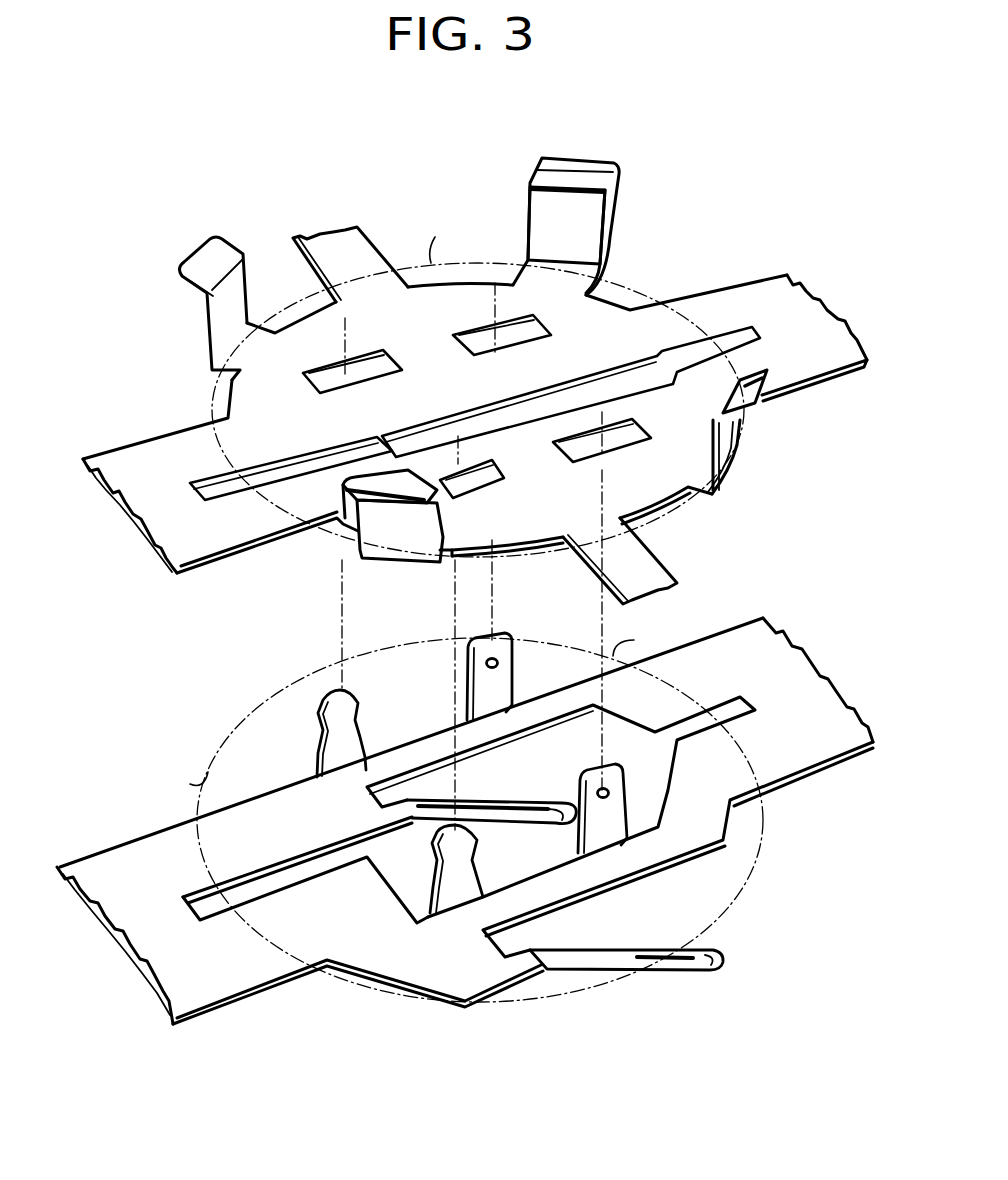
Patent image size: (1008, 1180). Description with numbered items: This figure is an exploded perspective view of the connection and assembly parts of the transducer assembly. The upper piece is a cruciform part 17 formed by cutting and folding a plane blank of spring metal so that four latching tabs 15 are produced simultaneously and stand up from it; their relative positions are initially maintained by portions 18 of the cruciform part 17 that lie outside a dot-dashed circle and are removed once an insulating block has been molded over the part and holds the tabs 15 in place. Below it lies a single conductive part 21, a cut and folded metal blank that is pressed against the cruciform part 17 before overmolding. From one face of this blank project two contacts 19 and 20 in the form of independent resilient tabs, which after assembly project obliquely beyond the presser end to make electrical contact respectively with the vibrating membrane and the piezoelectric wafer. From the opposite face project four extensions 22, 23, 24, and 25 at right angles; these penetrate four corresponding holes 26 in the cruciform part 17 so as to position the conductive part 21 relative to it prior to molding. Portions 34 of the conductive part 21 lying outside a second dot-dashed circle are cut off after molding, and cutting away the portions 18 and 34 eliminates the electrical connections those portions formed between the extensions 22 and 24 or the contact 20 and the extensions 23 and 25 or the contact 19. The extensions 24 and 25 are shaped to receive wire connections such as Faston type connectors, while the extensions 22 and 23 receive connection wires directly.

The latching tab 15 is at (225, 307).
The cruciform part 17 is at (280, 268).
The portions of the cruciform part 18 is at (353, 250).
The contact 19 is at (617, 960).
The contact 20 is at (483, 810).
The conductive part 21 is at (285, 758).
The extension 22 is at (340, 728).
The extension 23 is at (477, 870).
The extension 24 is at (500, 683).
The extension 25 is at (608, 812).
The hole 26 is at (475, 343).
The portions of the conductive part 34 is at (783, 680).